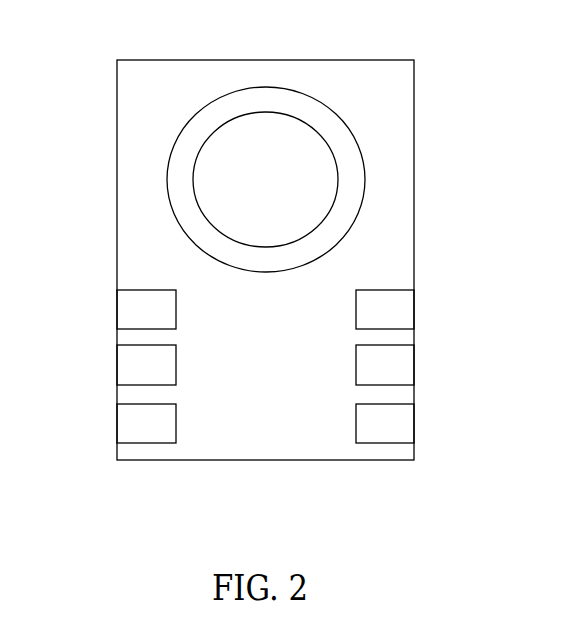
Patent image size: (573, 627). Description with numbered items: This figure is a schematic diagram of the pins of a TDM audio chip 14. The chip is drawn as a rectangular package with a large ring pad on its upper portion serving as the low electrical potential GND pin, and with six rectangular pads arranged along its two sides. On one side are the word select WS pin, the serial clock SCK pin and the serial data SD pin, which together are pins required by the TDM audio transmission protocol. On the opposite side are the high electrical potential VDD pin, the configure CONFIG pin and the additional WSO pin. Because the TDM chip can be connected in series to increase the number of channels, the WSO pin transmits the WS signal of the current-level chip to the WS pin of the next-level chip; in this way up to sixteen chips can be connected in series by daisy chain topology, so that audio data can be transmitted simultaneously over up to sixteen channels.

The TDM audio chip 14 is at (100, 43).
The low electrical potential GND pin GND is at (243, 179).
The word select pin WS is at (123, 309).
The serial clock pin SCK is at (120, 365).
The serial data pin SD is at (124, 423).
The high electrical potential VDD pin VDD is at (413, 309).
The configure pin CONFIG is at (432, 365).
The WSO pin WSO is at (414, 423).